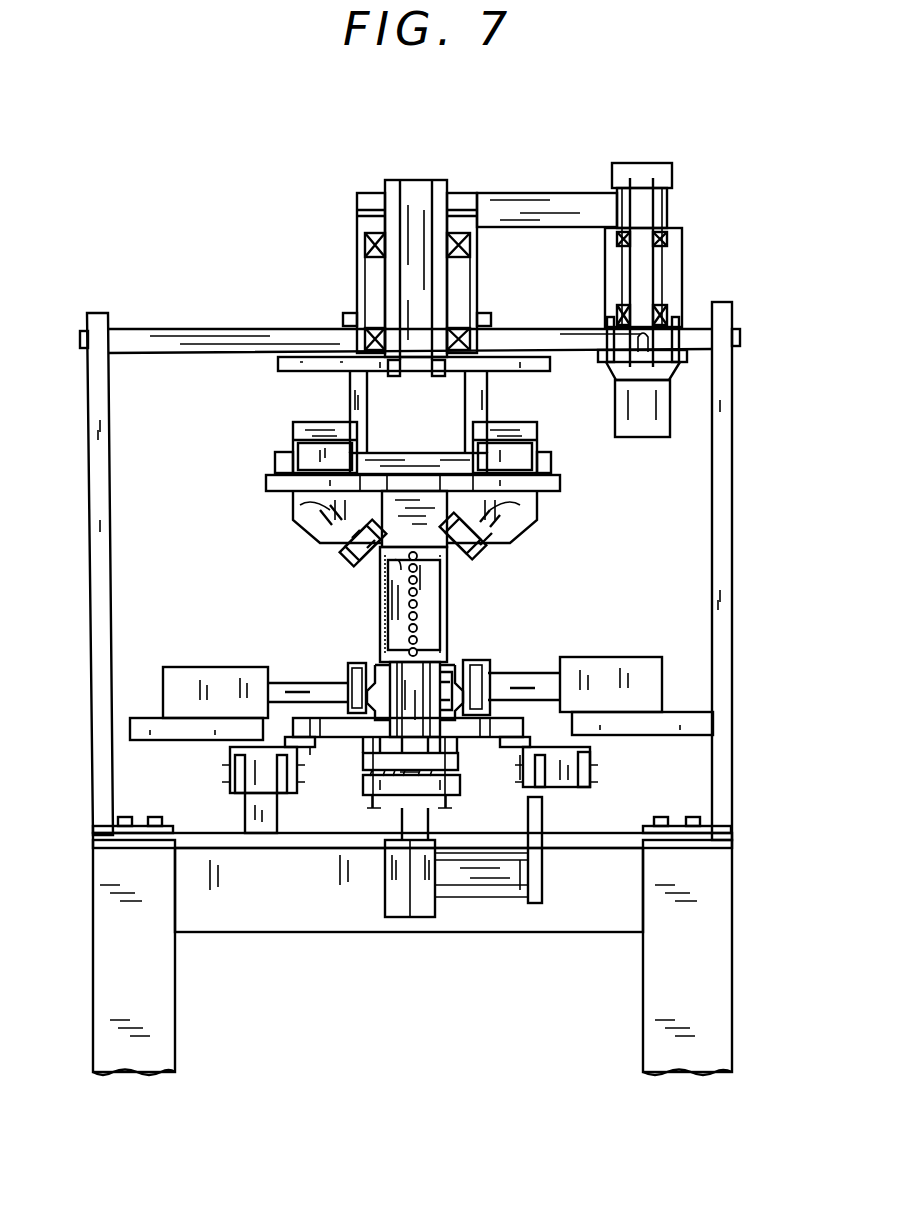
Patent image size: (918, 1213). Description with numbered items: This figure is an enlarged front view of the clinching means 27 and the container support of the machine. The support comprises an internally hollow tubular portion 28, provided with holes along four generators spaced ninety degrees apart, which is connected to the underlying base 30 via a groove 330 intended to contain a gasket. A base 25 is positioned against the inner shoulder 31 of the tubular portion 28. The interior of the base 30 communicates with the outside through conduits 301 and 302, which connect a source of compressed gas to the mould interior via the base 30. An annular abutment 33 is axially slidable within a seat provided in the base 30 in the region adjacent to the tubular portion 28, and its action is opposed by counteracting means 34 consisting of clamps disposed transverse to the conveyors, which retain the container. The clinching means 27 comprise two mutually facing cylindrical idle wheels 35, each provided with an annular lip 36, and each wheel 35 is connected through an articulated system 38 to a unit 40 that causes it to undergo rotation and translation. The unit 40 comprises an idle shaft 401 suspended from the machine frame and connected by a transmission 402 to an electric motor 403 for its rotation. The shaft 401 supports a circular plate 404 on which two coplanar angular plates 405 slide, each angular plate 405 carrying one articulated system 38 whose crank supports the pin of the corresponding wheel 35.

The clinching means 27 is at (200, 150).
The idle shaft 401 is at (420, 180).
The transmission 402 is at (552, 193).
The electric motor 403 is at (668, 425).
The circular plate 404 is at (321, 357).
The unit 40 is at (270, 431).
The annular lip 36 is at (330, 520).
The angular plate 405 is at (349, 553).
The cylindrical idle wheel 35 is at (342, 555).
The articulated system 38 is at (496, 536).
The tubular portion 28 is at (445, 578).
The base 25 is at (446, 617).
The inner shoulder 31 is at (378, 602).
The groove 330 is at (440, 683).
The counteracting means 34 is at (338, 671).
The annular abutment 33 is at (577, 800).
The conduit 302 is at (450, 743).
The conduit 301 is at (388, 740).
The base 30 is at (420, 792).